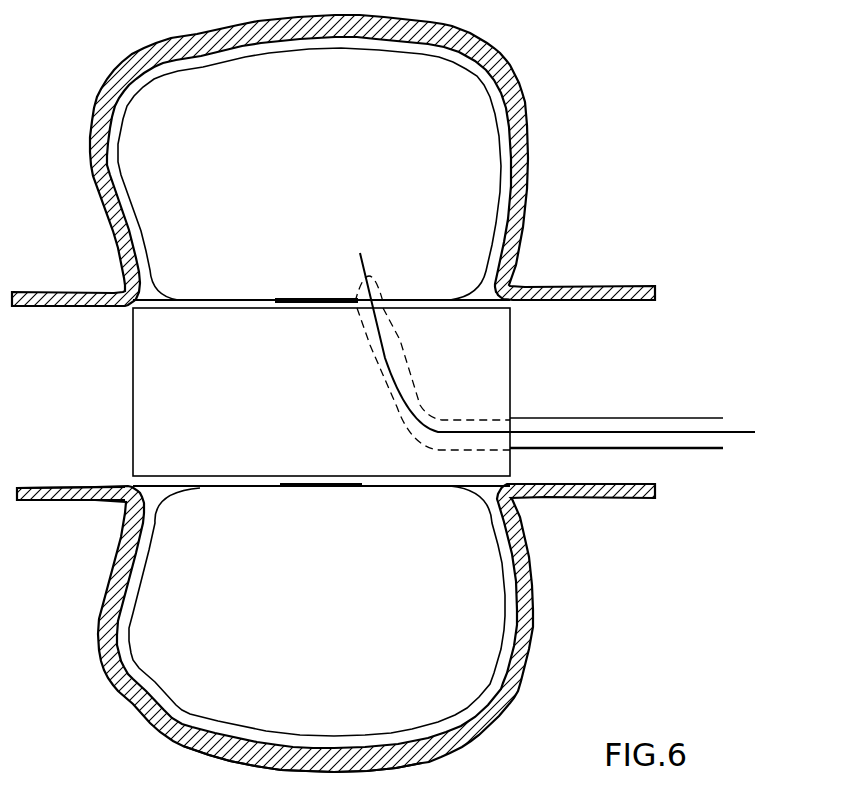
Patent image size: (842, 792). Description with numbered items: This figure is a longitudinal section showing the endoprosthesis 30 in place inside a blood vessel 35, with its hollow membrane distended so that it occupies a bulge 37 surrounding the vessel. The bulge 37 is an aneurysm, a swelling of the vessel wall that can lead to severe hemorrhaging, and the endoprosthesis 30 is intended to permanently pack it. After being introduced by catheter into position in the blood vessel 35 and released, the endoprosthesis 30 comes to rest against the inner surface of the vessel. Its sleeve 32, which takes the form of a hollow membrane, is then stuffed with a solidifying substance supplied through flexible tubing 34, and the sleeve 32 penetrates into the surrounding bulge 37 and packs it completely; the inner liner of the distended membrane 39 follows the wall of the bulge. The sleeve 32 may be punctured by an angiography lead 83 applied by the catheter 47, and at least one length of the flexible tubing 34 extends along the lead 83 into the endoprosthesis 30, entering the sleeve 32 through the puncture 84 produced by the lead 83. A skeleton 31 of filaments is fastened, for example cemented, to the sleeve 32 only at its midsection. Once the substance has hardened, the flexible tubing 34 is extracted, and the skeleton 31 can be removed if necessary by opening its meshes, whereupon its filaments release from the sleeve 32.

The endoprosthesis 30 is at (555, 226).
The skeleton 31 is at (516, 383).
The sleeve 32 is at (492, 684).
The flexible tubing 34 is at (360, 343).
The blood vessel 35 is at (37, 503).
The bulge 37 is at (205, 748).
The inner liner of lower chamber 39 is at (470, 613).
The catheter 47 is at (671, 448).
The angiography lead 83 is at (655, 432).
The puncture 84 is at (362, 300).